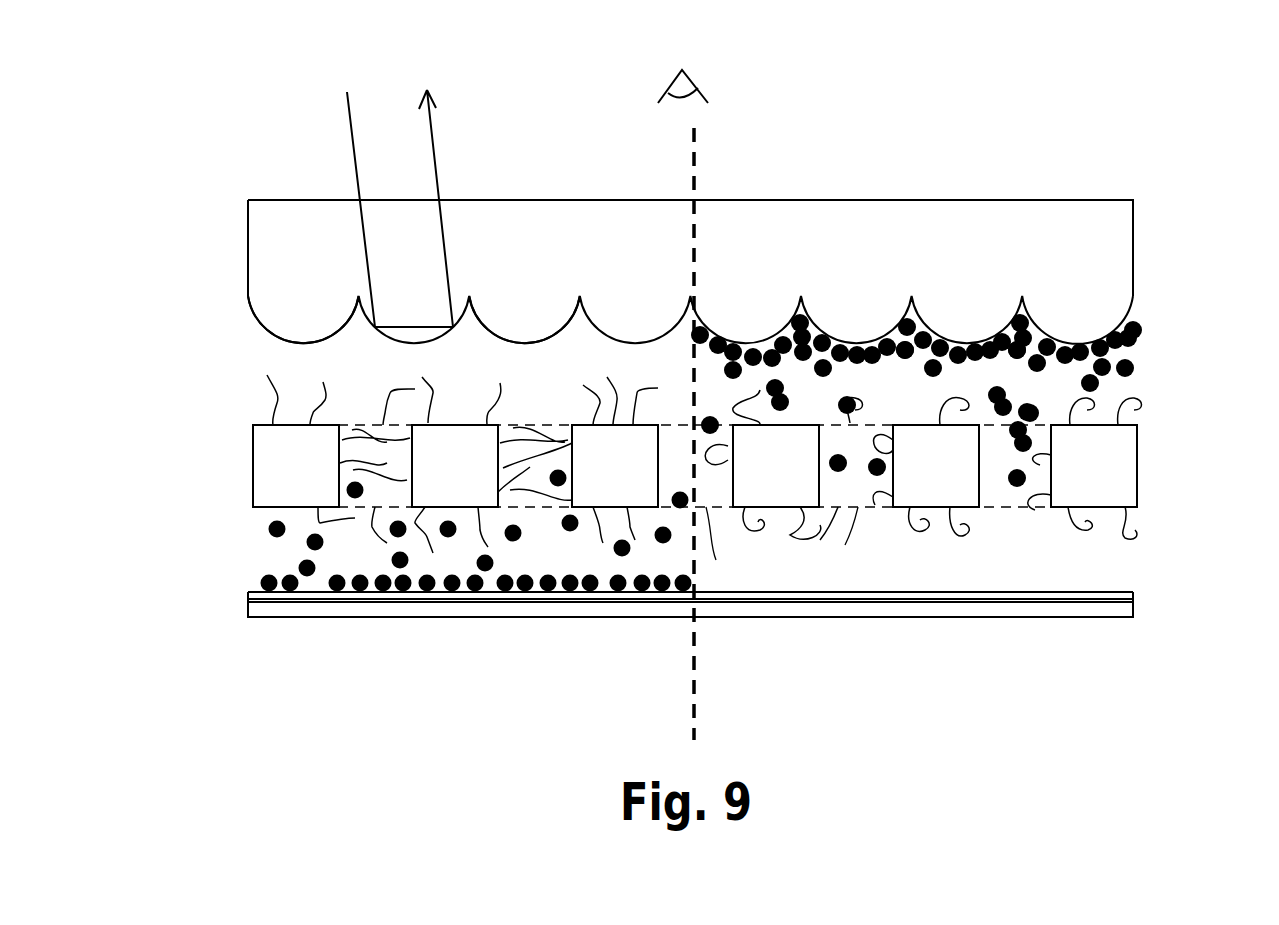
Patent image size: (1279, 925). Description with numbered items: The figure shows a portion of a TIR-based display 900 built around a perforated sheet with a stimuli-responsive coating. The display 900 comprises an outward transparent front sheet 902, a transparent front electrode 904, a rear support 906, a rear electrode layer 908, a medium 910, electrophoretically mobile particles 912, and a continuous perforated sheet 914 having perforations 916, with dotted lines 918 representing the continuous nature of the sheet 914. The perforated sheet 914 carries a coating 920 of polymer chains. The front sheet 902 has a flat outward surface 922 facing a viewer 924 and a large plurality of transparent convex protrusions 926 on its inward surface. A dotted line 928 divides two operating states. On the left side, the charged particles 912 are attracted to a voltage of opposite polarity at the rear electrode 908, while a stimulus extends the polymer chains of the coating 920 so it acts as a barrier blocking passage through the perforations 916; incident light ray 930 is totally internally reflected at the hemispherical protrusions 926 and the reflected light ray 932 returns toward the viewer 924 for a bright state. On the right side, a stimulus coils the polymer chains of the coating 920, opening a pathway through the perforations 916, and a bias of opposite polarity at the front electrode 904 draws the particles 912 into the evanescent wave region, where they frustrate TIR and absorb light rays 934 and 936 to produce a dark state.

The display 900 is at (1032, 168).
The outward transparent front sheet 902 is at (812, 262).
The transparent front electrode 904 is at (257, 327).
The rear support 906 is at (880, 620).
The rear electrode layer 908 is at (1105, 592).
The medium 910 is at (386, 380).
The electrophoretically mobile particles 912 is at (268, 576).
The continuous perforated sheet 914 is at (320, 483).
The perforations 916 is at (718, 507).
The dotted lines 918 is at (875, 507).
The coating 920 is at (658, 390).
The flat outward surface 922 is at (262, 198).
The viewer 924 is at (700, 88).
The transparent convex protrusions 926 is at (642, 318).
The dotted line 928 is at (697, 160).
The light ray 930 is at (353, 172).
The reflected light ray 932 is at (438, 183).
The light ray 934 is at (903, 312).
The light ray 936 is at (1010, 314).